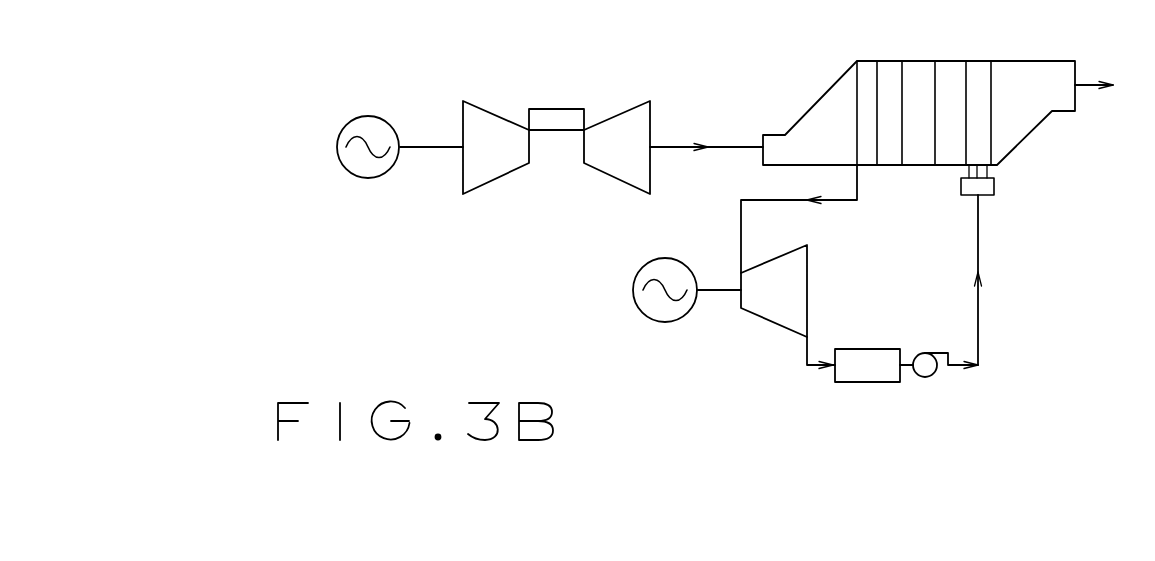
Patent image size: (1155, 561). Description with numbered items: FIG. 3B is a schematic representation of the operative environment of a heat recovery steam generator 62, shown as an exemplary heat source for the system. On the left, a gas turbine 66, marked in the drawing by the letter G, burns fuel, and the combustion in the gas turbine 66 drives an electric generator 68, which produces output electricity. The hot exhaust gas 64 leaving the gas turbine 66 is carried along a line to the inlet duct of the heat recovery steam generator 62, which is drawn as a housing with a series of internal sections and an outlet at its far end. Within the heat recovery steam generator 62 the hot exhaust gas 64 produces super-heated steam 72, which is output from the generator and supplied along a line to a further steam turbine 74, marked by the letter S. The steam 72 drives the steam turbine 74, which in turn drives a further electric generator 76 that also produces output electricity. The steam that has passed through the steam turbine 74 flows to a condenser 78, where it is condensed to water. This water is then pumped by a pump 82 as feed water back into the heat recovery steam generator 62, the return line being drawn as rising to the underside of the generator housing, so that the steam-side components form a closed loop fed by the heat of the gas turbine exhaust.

The heat recovery steam generator 62 is at (1037, 156).
The hot exhaust gas 64 is at (722, 145).
The gas turbine 66 is at (551, 92).
The electric generator 68 is at (369, 114).
The super-heated steam 72 is at (833, 203).
The steam turbine 74 is at (773, 338).
The electric generator 76 is at (663, 258).
The condenser 78 is at (850, 383).
The pump 82 is at (932, 378).
The gas turbine G is at (561, 192).
The steam turbine S is at (787, 352).